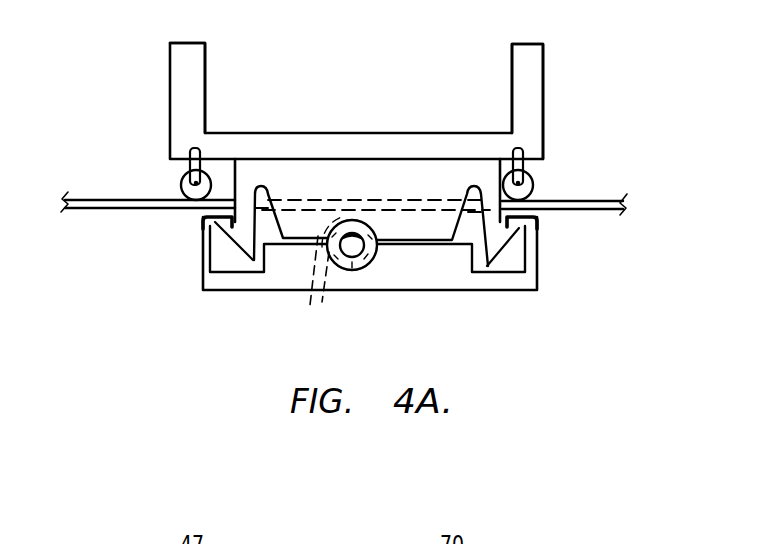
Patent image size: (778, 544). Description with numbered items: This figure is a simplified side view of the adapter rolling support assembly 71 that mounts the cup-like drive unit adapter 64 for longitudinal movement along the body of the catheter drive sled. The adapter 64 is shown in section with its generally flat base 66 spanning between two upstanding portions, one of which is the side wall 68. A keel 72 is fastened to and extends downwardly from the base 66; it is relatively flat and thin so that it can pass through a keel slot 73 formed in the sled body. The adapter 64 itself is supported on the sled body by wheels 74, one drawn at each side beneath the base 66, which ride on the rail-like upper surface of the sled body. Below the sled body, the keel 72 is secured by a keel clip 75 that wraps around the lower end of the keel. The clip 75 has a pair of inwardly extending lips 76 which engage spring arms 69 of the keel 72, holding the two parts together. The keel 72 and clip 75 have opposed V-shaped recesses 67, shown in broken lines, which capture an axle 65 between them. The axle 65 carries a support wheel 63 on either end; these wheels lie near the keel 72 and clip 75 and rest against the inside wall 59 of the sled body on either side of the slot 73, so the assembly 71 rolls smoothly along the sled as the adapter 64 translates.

The inside wall of sled body 59 is at (103, 210).
The support wheel 63 is at (356, 220).
The drive unit adapter 64 is at (583, 50).
The axle 65 is at (353, 250).
The base 66 is at (240, 133).
The V-shaped recesses 67 is at (312, 303).
The side wall 68 is at (535, 100).
The spring arms 69 is at (247, 233).
The adapter rolling support assembly 71 is at (645, 265).
The keel 72 is at (437, 178).
The keel slot 73 is at (534, 217).
The wheels 74 is at (181, 191).
The keel clip 75 is at (413, 274).
The inwardly extending lips 76 is at (214, 224).